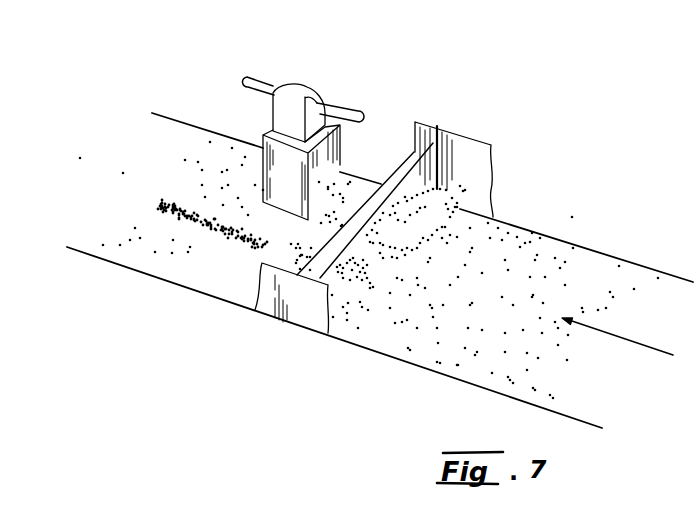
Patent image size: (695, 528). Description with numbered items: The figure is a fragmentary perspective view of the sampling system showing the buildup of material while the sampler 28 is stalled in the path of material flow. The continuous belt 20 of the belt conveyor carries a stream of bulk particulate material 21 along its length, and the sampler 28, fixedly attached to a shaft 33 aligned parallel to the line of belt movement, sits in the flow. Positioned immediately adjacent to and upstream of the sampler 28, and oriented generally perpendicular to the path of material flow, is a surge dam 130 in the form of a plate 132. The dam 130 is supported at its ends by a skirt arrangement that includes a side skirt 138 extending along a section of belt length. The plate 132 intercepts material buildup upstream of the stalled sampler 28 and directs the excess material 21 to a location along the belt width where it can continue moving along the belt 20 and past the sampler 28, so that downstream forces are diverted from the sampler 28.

The continuous belt 20 is at (580, 245).
The bulk particulate material 21 is at (437, 357).
The sampler 28 is at (333, 150).
The shaft 33 is at (251, 79).
The surge dam 130 is at (438, 94).
The plate 132 is at (467, 150).
The side skirt 138 is at (288, 303).